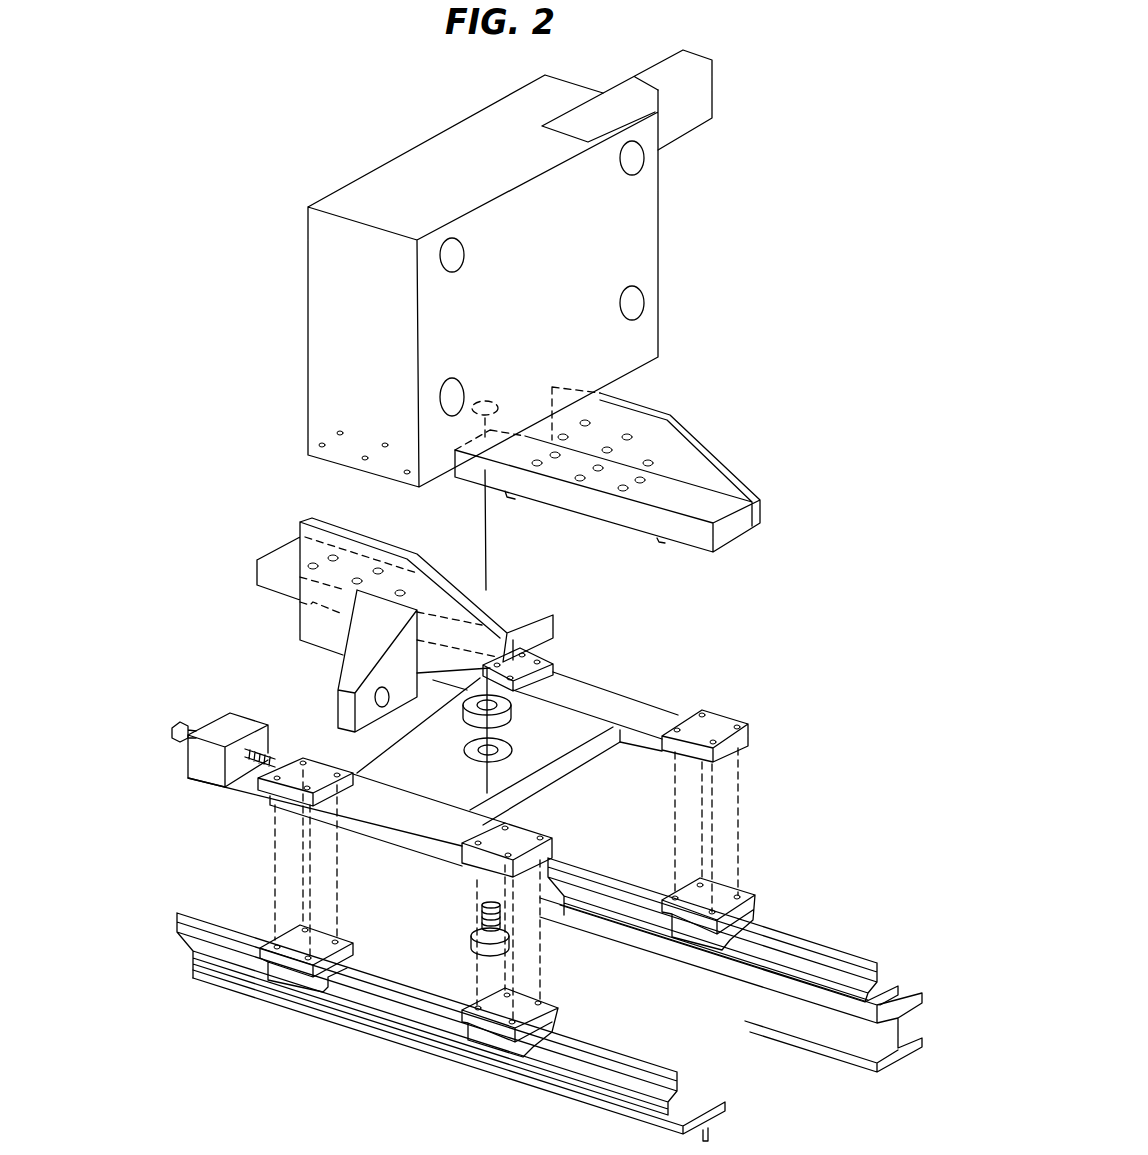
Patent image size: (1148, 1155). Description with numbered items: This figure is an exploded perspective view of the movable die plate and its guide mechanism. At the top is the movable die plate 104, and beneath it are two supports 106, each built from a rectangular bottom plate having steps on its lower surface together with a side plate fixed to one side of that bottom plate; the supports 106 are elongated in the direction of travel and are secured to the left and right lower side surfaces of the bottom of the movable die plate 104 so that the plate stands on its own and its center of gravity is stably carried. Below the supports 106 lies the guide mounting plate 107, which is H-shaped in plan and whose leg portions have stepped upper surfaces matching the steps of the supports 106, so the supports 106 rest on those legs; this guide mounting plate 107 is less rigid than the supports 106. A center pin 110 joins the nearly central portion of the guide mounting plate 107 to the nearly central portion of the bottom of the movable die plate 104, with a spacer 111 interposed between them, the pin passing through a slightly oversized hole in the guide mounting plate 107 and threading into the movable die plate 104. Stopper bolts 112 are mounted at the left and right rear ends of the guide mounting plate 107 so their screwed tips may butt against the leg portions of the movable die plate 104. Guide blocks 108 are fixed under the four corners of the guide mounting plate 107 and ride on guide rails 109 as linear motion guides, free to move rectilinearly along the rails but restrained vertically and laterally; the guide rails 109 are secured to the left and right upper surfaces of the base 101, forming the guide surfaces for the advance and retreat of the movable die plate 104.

The base 101 is at (852, 1047).
The movable die plate 104 is at (402, 177).
The support 106 is at (632, 523).
The guide mounting plate 107 is at (647, 718).
The guide block 108 is at (740, 916).
The guide rail 109 is at (798, 945).
The center pin 110 is at (477, 951).
The spacer 111 is at (462, 708).
The stopper bolt 112 is at (188, 726).